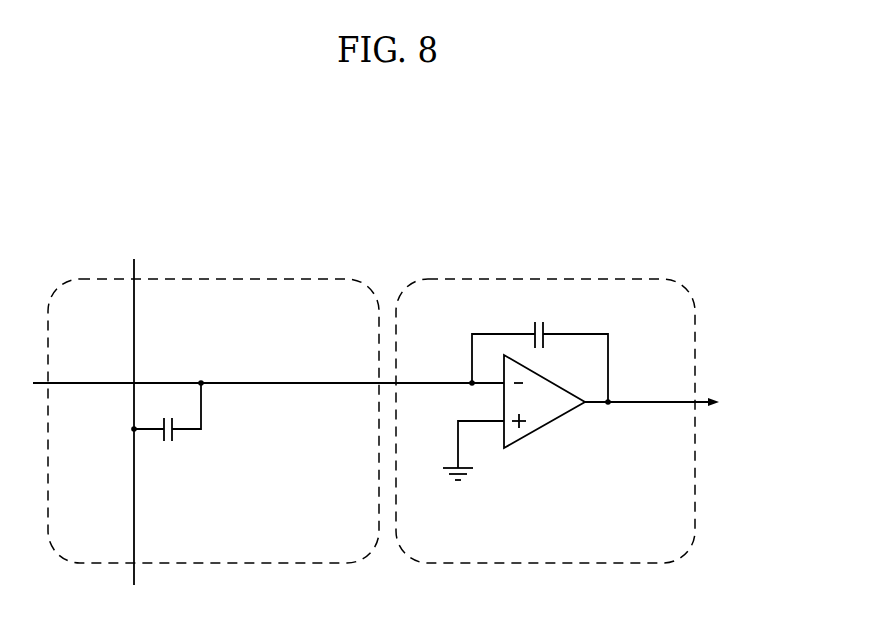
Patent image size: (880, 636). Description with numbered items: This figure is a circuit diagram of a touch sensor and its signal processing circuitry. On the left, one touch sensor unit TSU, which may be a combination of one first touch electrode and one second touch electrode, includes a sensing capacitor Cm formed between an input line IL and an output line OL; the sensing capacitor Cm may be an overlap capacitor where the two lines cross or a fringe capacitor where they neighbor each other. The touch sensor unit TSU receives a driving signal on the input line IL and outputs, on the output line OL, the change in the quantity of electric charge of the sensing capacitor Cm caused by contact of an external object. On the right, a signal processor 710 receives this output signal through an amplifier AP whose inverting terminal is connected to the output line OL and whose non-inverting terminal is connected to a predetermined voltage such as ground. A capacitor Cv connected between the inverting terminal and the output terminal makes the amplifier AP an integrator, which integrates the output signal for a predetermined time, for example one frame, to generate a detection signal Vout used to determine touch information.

The touch sensor unit TSU is at (282, 277).
The signal processor 710 is at (597, 277).
The input line IL is at (134, 333).
The output line OL is at (308, 383).
The sensing capacitor Cm is at (167, 426).
The capacitor Cv is at (538, 347).
The amplifier AP is at (543, 428).
The detection signal Vout is at (679, 403).